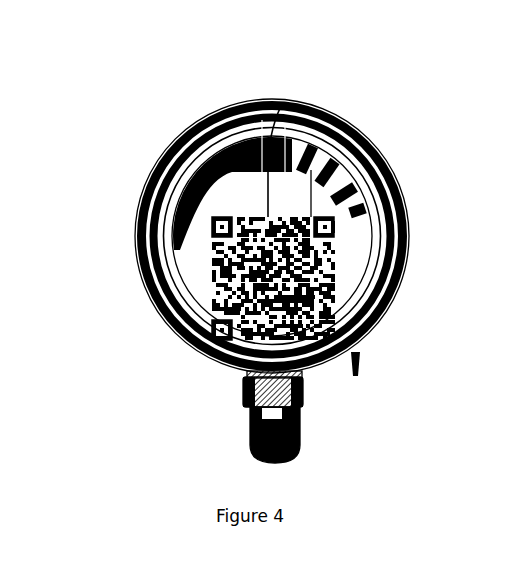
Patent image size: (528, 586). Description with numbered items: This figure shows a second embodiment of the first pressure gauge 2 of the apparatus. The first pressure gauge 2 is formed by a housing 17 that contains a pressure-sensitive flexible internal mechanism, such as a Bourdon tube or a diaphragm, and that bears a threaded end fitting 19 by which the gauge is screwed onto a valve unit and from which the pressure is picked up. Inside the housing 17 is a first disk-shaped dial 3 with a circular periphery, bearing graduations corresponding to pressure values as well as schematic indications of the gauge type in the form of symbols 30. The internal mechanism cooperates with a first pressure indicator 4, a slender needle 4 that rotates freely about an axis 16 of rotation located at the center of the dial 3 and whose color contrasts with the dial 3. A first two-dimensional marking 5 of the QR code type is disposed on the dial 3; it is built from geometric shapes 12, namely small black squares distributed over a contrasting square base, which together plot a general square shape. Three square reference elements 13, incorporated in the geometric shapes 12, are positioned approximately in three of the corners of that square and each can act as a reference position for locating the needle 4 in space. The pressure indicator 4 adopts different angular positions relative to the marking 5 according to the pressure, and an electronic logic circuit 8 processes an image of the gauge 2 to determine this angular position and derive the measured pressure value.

The first pressure gauge 2 is at (273, 252).
The first dial 3 is at (360, 255).
The first pressure indicator 4 is at (342, 128).
The first two-dimensional marking 5 is at (198, 268).
The electronic logic circuit 8 is at (200, 302).
The geometric shapes 12 is at (341, 298).
The reference elements 13 is at (221, 216).
The axis of rotation 16 is at (281, 106).
The housing 17 is at (353, 357).
The threaded end fitting 19 is at (298, 437).
The symbols 30 is at (214, 102).